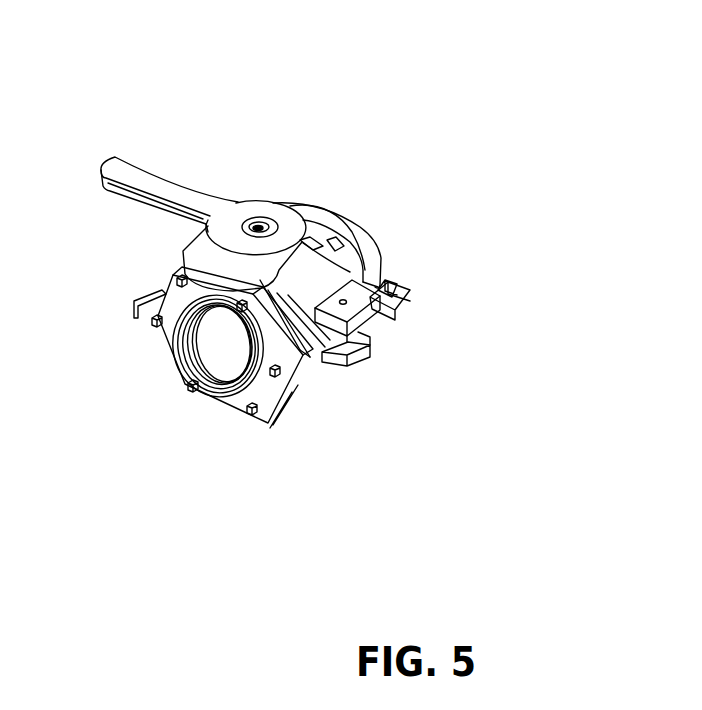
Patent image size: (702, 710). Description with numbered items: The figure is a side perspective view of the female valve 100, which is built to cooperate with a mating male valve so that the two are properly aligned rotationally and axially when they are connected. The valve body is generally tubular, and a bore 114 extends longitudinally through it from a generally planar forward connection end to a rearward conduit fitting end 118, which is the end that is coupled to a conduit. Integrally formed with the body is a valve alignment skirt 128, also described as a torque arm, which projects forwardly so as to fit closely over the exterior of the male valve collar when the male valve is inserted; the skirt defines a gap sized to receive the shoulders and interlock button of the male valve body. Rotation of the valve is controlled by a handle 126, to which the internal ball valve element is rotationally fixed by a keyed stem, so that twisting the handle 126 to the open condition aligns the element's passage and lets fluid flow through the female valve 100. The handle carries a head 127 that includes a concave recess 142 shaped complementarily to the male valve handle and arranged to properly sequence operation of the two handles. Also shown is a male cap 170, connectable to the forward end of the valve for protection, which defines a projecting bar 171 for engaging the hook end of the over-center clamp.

The female valve 100 is at (477, 134).
The bore 114 is at (220, 340).
The conduit fitting end 118 is at (218, 425).
The handle 126 is at (223, 185).
The head 127 is at (297, 194).
The valve alignment skirt 128 is at (153, 163).
The concave recess 142 is at (367, 217).
The male cap 170 is at (382, 255).
The projecting bar 171 is at (393, 281).